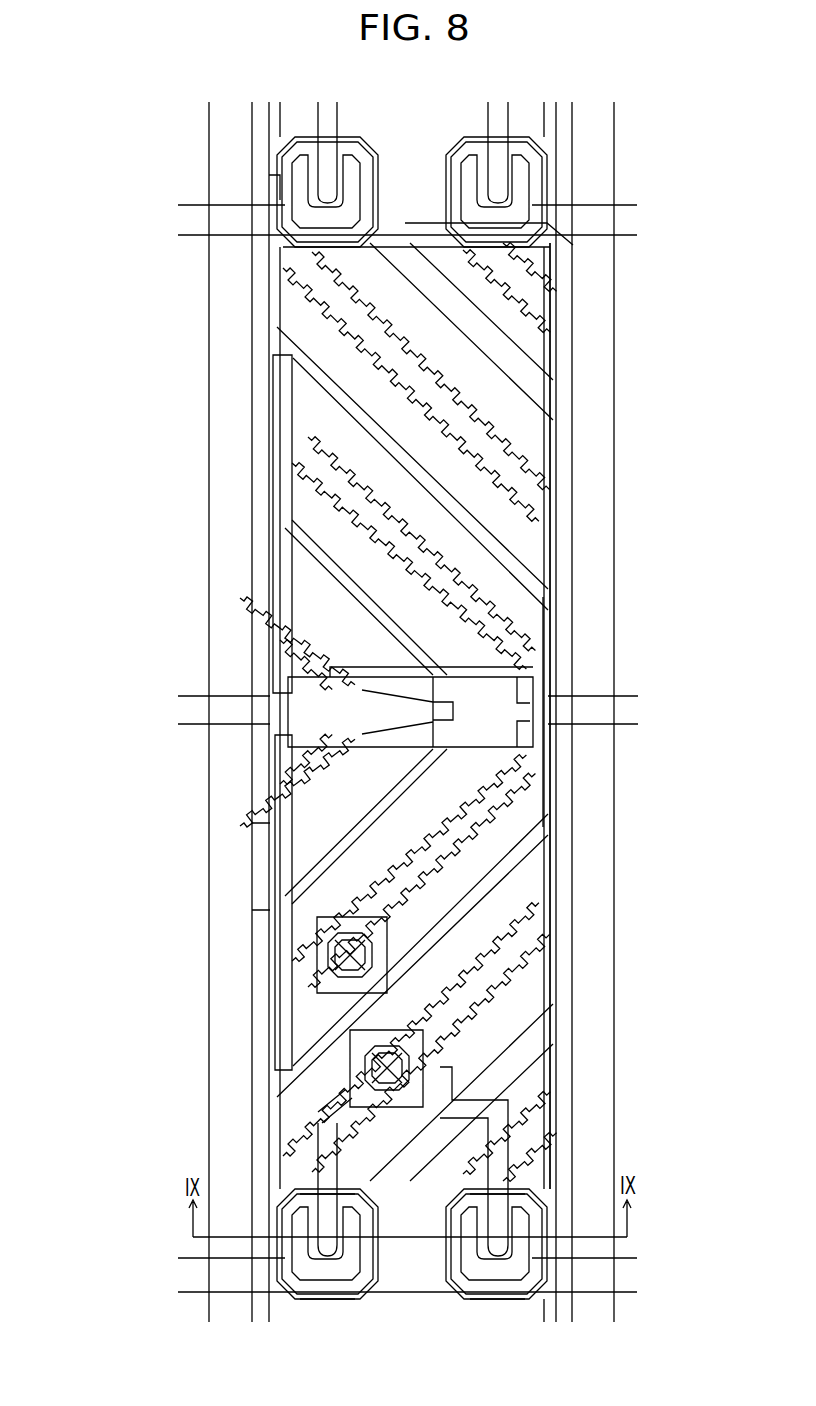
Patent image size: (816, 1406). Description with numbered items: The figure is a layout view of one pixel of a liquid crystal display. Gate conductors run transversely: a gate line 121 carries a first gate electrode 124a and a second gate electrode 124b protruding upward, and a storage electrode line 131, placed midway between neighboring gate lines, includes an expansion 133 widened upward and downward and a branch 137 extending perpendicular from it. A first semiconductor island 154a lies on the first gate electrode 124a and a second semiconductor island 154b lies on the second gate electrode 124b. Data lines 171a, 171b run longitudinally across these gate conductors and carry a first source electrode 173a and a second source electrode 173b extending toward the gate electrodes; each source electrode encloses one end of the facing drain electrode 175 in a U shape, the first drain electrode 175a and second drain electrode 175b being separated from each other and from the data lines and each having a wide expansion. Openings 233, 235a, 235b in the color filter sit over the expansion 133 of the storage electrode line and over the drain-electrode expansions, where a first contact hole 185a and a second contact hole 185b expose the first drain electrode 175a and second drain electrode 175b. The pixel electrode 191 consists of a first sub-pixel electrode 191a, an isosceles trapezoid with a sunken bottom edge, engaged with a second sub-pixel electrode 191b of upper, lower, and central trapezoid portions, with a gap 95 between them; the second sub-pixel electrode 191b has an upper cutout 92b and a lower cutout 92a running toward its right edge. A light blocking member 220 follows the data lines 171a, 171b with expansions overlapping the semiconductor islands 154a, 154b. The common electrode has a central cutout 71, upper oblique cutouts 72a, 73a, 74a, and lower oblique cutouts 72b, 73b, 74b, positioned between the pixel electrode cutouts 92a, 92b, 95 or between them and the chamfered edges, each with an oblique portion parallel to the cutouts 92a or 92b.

The light blocking member 220 is at (207, 142).
The drain electrode 175 is at (280, 185).
The first drain electrode 175a is at (540, 1140).
The second drain electrode 175b is at (330, 1135).
The first source electrode 173a is at (530, 1275).
The second source electrode 173b is at (378, 1197).
The first semiconductor island 154a is at (480, 1299).
The second semiconductor island 154b is at (337, 1299).
The first gate electrode 124a is at (540, 1183).
The second gate electrode 124b is at (330, 1165).
The gate line 121 is at (641, 1292).
The storage electrode line 131 is at (638, 724).
The expansion 133 is at (552, 623).
The branch 137 is at (273, 410).
The opening 233 is at (550, 677).
The pixel electrode 191 is at (122, 467).
The first sub-pixel electrode 191a is at (293, 493).
The second sub-pixel electrode 191b is at (248, 453).
The first data line 171a is at (573, 928).
The second data line 171b is at (250, 782).
The first contact hole 185a is at (300, 958).
The second contact hole 185b is at (350, 1070).
The opening 235a is at (540, 880).
The opening 235b is at (540, 983).
The central cutout 71 is at (397, 722).
The first upper oblique cutout 72a is at (393, 877).
The first lower oblique cutout 72b is at (397, 540).
The second upper oblique cutout 73a is at (498, 953).
The second lower oblique cutout 73b is at (417, 387).
The third upper oblique cutout 74a is at (540, 1115).
The third lower oblique cutout 74b is at (503, 288).
The lower cutout 92a is at (515, 1047).
The upper cutout 92b is at (453, 312).
The gap 95 is at (347, 850).